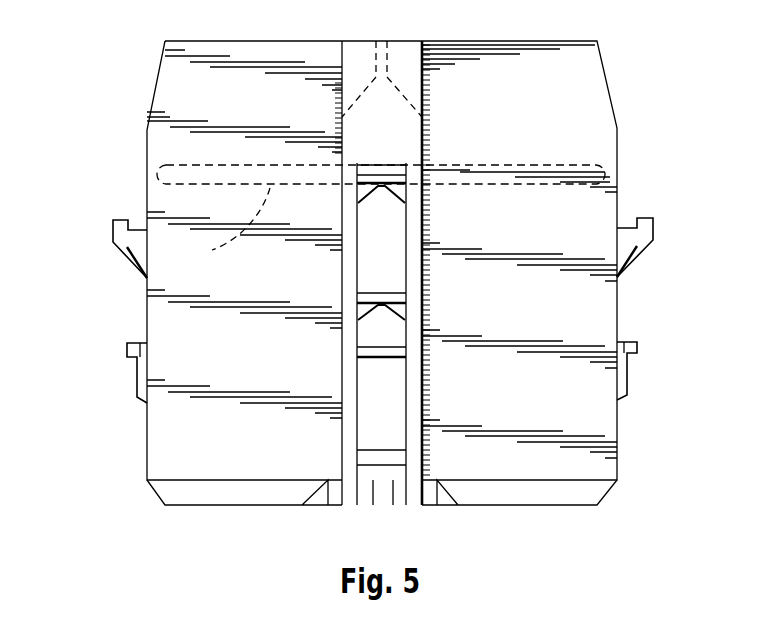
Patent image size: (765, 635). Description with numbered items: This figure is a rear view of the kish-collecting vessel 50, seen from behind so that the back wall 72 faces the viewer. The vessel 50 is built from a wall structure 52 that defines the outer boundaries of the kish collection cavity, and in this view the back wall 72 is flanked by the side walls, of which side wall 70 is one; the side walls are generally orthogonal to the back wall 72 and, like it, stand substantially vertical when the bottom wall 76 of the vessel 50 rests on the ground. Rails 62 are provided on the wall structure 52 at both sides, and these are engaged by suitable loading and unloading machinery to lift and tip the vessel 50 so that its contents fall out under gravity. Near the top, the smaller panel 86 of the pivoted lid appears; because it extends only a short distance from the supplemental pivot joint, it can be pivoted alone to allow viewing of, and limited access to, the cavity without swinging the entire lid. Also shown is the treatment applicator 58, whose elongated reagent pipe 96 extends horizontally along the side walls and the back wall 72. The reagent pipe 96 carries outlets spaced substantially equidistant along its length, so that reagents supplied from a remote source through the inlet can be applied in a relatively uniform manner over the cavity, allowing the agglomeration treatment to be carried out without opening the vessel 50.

The vessel 50 is at (382, 314).
The wall structure 52 is at (646, 114).
The treatment applicator 58 is at (278, 170).
The rails 62 is at (127, 250).
The side wall 70 is at (148, 435).
The back wall 72 is at (240, 452).
The bottom wall 76 is at (517, 481).
The panel 86 is at (617, 440).
The reagent pipe 96 is at (225, 228).